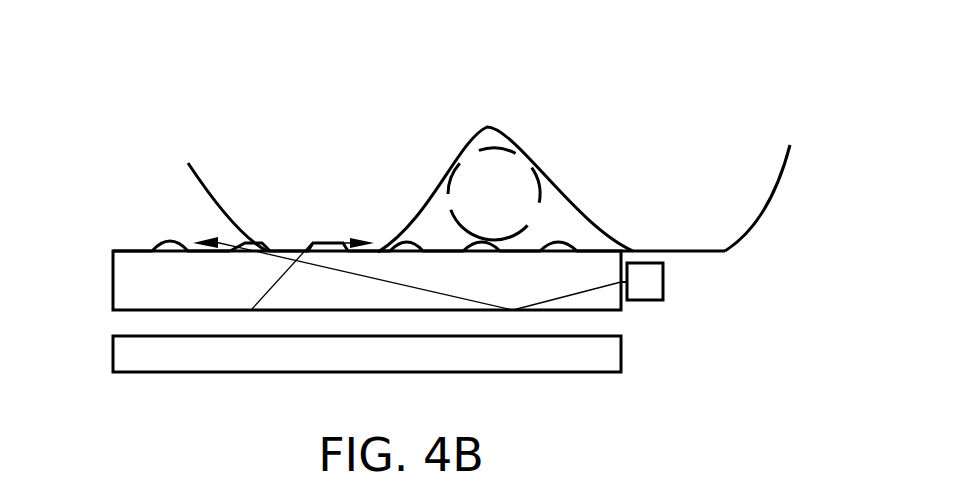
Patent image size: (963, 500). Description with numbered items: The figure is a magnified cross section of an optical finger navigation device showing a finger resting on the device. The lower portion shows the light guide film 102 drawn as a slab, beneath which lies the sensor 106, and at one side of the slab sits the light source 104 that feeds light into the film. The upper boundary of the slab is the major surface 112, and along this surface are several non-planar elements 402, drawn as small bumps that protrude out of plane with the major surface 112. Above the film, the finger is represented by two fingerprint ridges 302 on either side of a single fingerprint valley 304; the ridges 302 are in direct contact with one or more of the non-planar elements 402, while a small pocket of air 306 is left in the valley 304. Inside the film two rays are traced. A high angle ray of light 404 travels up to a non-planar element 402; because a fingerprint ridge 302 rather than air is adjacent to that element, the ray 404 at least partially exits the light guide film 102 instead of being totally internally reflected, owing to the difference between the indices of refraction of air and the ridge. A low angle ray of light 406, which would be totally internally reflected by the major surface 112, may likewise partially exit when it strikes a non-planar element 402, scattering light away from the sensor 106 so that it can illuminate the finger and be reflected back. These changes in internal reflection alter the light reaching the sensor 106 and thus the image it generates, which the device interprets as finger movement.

The light guide film 102 is at (113, 284).
The light source 104 is at (663, 281).
The sensor 106 is at (113, 349).
The major surface 112 is at (138, 250).
The fingerprint ridges 302 is at (217, 100).
The fingerprint valley 304 is at (438, 100).
The pockets of air 306 is at (447, 192).
The non-planar elements 402 is at (240, 243).
The high angle ray of light 404 is at (277, 284).
The low angle ray of light 406 is at (410, 282).